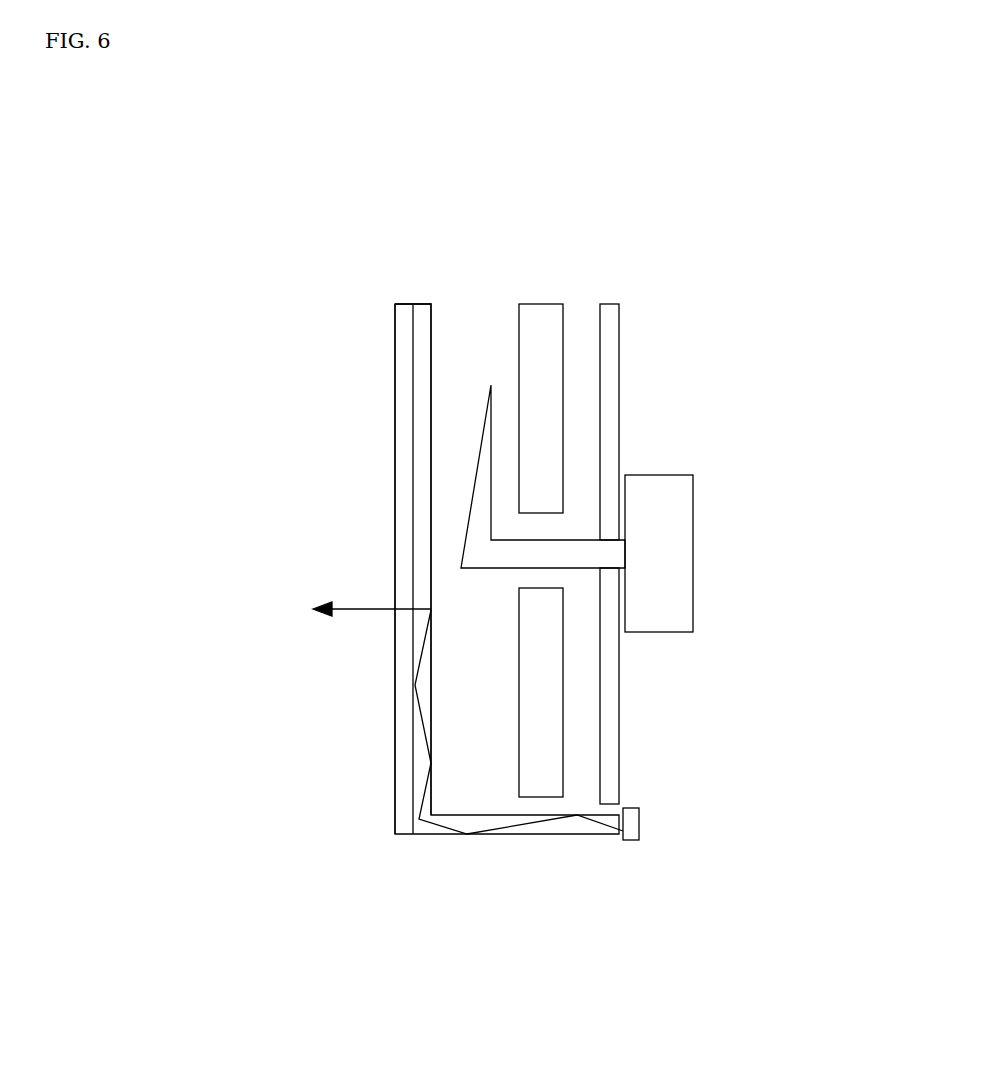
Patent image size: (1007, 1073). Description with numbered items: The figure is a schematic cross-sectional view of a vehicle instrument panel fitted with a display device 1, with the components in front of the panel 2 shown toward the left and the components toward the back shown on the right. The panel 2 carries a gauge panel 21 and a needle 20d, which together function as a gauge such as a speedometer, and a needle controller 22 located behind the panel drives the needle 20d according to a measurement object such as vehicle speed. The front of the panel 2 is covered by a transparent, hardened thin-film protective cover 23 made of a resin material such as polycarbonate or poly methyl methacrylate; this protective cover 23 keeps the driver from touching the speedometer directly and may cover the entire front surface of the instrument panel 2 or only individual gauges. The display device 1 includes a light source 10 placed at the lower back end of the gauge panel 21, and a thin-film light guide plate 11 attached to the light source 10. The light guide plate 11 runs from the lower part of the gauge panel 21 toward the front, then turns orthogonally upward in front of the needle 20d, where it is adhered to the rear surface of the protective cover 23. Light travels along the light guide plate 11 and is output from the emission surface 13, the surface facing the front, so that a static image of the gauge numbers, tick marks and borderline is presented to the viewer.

The display device 1 is at (580, 955).
The panel 2 is at (732, 219).
The light source 10 is at (631, 842).
The light guide plate 11 is at (423, 830).
The emission surface 13 is at (407, 406).
The needle 20d is at (483, 430).
The gauge panel 21 is at (541, 312).
The needle controller 22 is at (682, 546).
The protective cover 23 is at (400, 797).